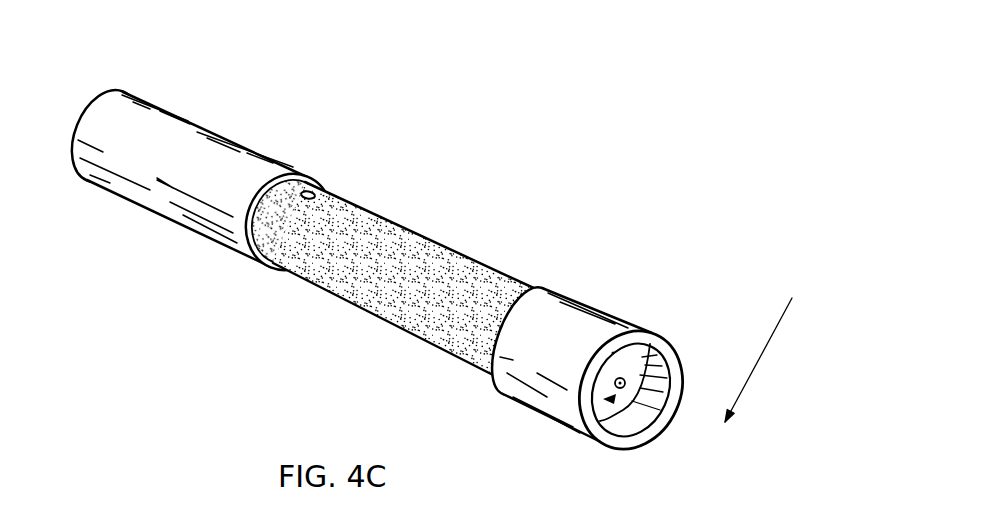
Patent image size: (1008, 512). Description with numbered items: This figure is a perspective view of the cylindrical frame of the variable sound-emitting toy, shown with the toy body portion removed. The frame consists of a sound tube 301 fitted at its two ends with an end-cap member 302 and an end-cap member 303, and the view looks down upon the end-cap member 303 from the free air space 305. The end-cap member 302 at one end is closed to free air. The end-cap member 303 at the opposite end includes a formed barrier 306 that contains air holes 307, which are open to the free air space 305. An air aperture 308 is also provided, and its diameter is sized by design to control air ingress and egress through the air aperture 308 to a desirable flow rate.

The sound tube 301 is at (427, 232).
The end-cap member 302 is at (205, 118).
The end-cap member 303 is at (602, 300).
The free air space 305 is at (792, 298).
The formed barrier 306 is at (663, 423).
The air holes 307 is at (653, 338).
The air aperture 308 is at (315, 183).